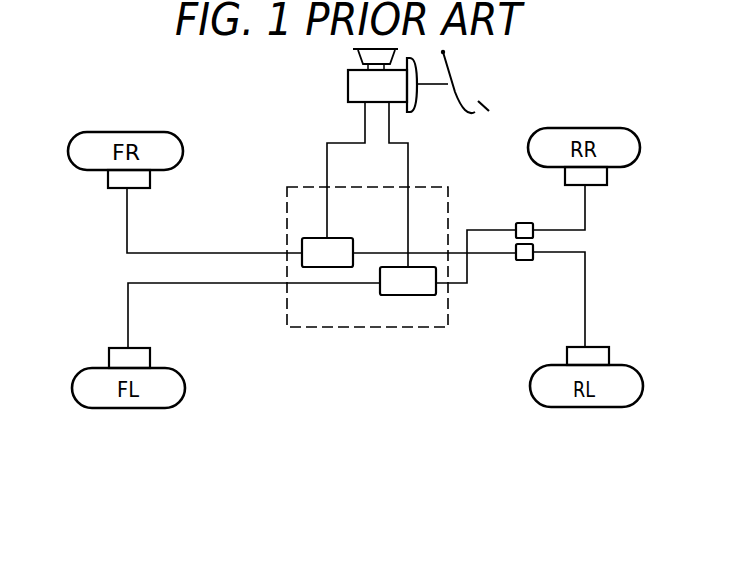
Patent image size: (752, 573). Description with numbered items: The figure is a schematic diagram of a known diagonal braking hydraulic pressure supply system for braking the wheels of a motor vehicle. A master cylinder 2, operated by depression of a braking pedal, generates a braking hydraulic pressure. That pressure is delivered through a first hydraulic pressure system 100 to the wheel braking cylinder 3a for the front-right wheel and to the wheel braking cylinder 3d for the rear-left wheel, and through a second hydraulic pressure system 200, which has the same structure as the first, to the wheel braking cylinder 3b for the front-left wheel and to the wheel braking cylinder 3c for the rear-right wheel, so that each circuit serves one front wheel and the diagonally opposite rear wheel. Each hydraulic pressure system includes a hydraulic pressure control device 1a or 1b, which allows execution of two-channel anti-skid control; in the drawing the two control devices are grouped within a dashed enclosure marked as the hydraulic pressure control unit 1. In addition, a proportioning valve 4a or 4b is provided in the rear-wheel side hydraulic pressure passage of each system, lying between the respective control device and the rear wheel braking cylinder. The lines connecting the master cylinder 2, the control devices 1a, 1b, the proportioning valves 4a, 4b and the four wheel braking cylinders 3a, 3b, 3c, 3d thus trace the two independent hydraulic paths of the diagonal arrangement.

The hydraulic pressure control unit 1 is at (328, 328).
The hydraulic pressure control device 1a is at (343, 238).
The hydraulic pressure control device 1b is at (407, 290).
The master cylinder 2 is at (356, 82).
The wheel braking cylinder 3a is at (112, 178).
The wheel braking cylinder 3b is at (112, 358).
The wheel braking cylinder 3c is at (610, 173).
The wheel braking cylinder 3d is at (598, 355).
The proportioning valve 4a is at (523, 222).
The proportioning valve 4b is at (526, 262).
The hydraulic pressure system 100 is at (326, 134).
The hydraulic pressure system 200 is at (424, 160).